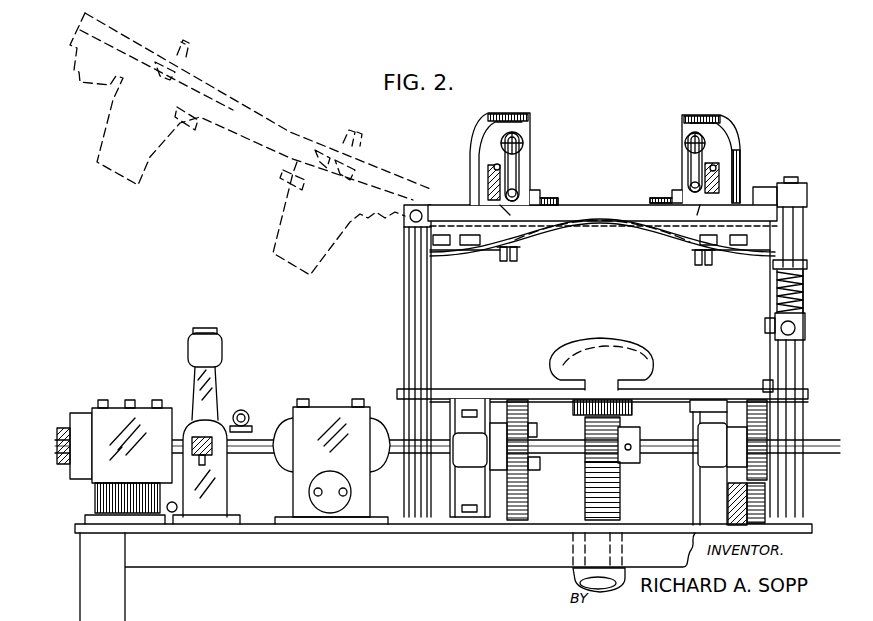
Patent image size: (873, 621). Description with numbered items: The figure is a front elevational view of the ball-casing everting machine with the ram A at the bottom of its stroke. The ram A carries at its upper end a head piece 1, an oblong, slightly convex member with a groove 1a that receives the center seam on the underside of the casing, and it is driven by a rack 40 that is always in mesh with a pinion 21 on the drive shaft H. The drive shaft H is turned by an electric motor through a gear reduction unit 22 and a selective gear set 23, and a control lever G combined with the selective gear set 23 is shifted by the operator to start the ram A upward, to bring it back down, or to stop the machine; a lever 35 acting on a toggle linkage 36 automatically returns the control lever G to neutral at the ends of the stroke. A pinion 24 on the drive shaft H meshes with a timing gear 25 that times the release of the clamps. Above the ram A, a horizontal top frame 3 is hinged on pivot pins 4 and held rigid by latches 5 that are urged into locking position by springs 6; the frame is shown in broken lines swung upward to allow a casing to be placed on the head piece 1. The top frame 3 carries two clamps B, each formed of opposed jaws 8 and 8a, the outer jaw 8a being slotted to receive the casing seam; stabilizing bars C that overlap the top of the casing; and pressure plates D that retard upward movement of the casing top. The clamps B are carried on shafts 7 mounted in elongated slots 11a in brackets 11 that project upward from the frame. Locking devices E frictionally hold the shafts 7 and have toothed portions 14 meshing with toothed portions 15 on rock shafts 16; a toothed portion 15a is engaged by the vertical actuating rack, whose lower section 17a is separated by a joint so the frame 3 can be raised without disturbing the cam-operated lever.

The head piece 1 is at (647, 365).
The groove 1a is at (608, 338).
The top frame 3 is at (207, 124).
The pivot pins 4 is at (408, 222).
The latches 5 is at (793, 203).
The springs 6 is at (800, 293).
The clamp-carrying shafts 7 is at (505, 190).
The jaw 8 is at (515, 256).
The outer jaw 8a is at (497, 252).
The brackets 11 is at (495, 150).
The elongated slots 11a is at (520, 160).
The toothed portions 14 is at (510, 205).
The toothed portions 15 is at (521, 220).
The toothed portion 15a is at (767, 215).
The rock shafts 16 is at (602, 205).
The bottom portion of actuating rack 17a is at (770, 360).
The pinion 21 is at (600, 450).
The gear reduction unit 22 is at (322, 405).
The selective gear set 23 is at (118, 422).
The pinion 24 is at (763, 468).
The timing gear 25 is at (763, 508).
The lever 35 is at (213, 460).
The toggle linkage 36 is at (246, 402).
The rack 40 is at (613, 512).
The ram A is at (560, 343).
The clamps B is at (502, 252).
The stabilizing bars C is at (670, 233).
The pressure plates D is at (558, 192).
The locking devices E is at (518, 173).
The control lever G is at (210, 380).
The drive shaft H is at (563, 450).